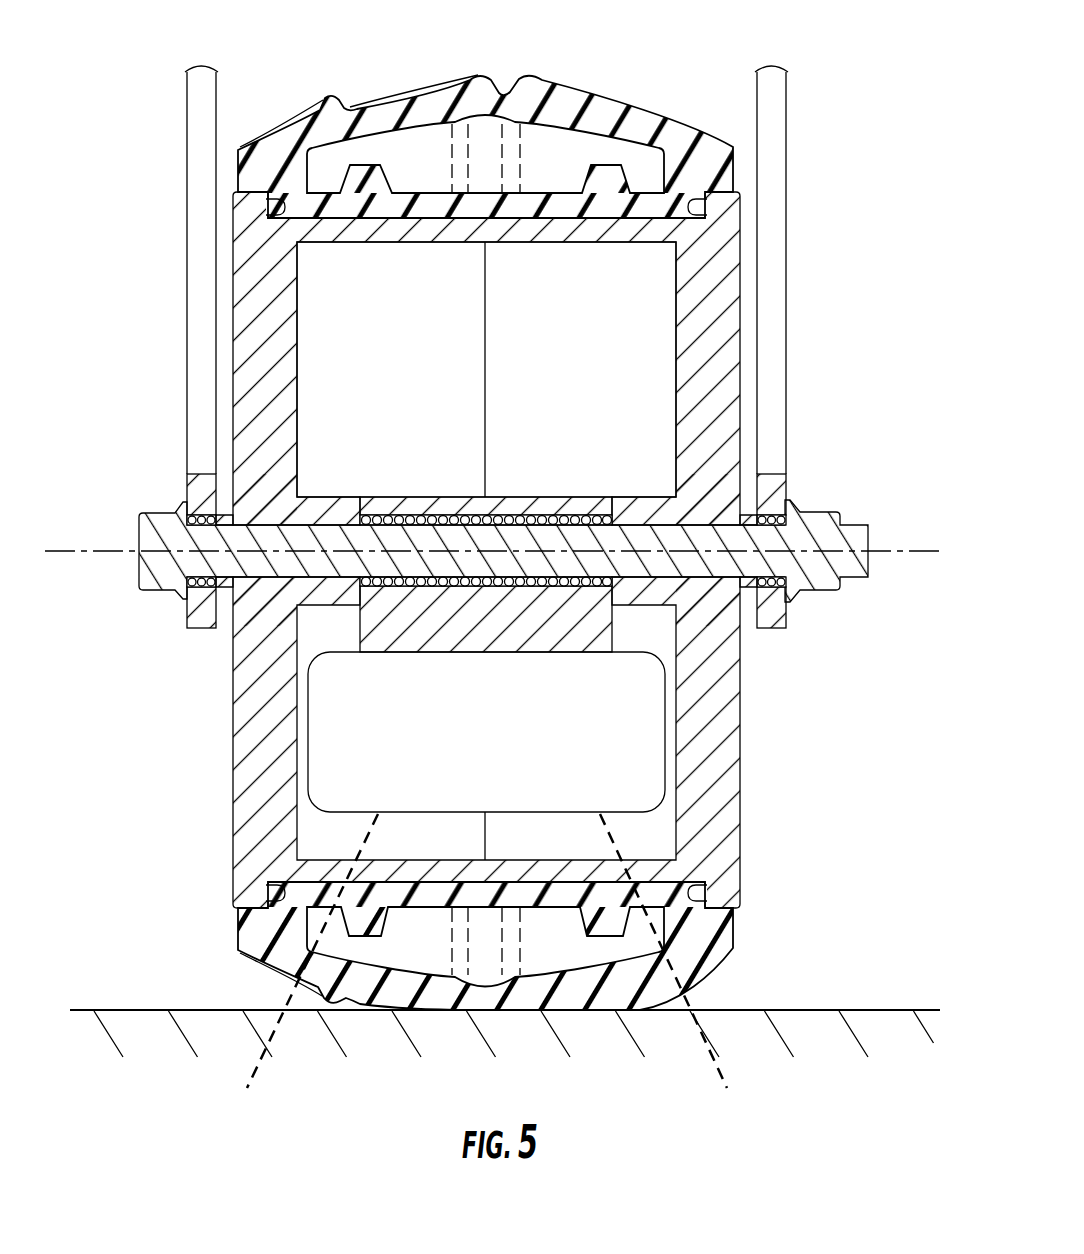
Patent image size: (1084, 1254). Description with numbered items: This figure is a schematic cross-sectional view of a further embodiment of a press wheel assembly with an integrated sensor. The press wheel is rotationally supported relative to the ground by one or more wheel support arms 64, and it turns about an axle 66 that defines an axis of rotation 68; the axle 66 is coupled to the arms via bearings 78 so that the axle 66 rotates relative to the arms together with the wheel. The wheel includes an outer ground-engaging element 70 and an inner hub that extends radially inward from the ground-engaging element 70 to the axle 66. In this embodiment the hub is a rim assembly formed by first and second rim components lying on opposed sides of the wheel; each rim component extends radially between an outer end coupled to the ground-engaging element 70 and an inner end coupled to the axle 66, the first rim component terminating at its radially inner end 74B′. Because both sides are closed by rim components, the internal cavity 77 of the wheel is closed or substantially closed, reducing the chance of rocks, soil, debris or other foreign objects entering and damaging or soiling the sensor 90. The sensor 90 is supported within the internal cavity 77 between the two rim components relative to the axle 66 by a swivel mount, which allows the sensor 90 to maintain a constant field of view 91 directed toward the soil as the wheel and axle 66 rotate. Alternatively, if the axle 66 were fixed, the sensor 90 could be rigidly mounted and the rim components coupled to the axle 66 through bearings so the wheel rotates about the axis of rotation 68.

The wheel support arms 64 is at (195, 356).
The axle 66 is at (152, 533).
The axis of rotation 68 is at (903, 560).
The outer ground-engaging element 70 is at (610, 118).
The radially inner end of the first rim component 74B′ is at (250, 620).
The internal cavity 77 is at (532, 373).
The bearings 78 is at (780, 517).
The sensor 90 is at (500, 747).
The field of view 91 is at (252, 1070).